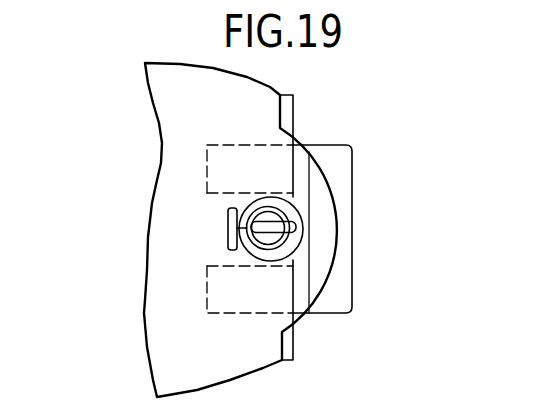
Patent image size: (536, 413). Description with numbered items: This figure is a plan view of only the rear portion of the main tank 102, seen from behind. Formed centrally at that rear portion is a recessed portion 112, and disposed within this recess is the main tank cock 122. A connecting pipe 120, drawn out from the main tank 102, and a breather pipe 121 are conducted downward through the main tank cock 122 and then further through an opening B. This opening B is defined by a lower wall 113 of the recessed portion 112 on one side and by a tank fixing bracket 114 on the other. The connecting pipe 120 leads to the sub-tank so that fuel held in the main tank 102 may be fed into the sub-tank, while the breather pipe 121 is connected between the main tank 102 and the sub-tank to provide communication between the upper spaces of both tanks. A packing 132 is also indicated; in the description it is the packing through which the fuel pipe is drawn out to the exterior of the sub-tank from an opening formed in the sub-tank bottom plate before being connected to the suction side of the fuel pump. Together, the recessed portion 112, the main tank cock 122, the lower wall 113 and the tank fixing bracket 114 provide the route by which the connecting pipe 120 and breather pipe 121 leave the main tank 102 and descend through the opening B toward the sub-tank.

The main tank 102 is at (226, 126).
The lower wall 113 is at (288, 136).
The tank fixing bracket 114 is at (338, 211).
The recessed portion 112 is at (268, 280).
The main tank cock 122 is at (279, 218).
The packing 132 is at (229, 223).
The connecting pipe 120 is at (305, 305).
The breather pipe 121 is at (243, 233).
The opening B is at (290, 247).